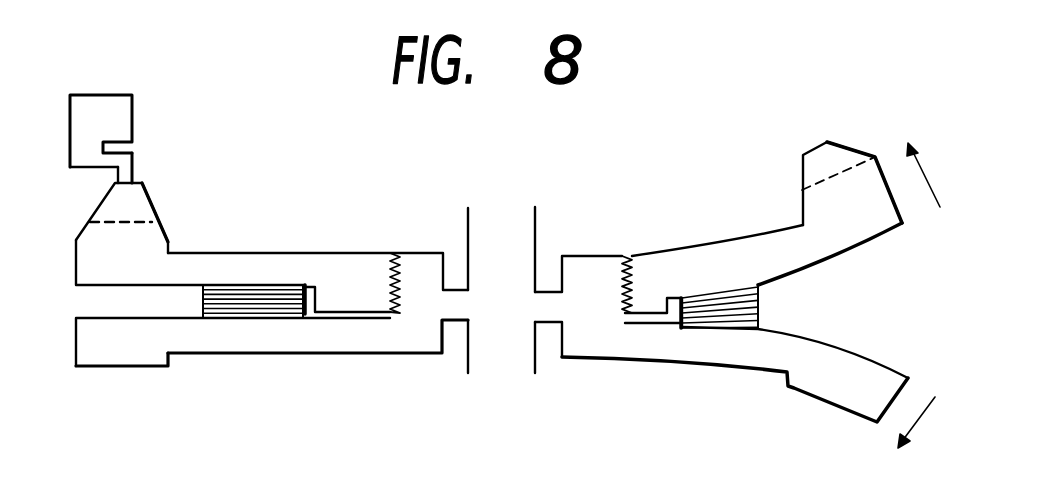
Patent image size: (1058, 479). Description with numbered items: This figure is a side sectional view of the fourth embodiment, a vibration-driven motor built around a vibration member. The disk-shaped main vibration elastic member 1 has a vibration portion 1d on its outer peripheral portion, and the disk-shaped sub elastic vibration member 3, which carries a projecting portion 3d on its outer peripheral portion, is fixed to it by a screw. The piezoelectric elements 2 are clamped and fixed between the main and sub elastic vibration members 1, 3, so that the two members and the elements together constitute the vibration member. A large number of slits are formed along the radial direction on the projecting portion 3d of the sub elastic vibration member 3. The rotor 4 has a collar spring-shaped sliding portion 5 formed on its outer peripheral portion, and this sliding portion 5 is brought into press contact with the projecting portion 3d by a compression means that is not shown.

The main vibration elastic member 1 is at (203, 337).
The vibration portion 1d is at (110, 353).
The piezoelectric elements 2 is at (287, 310).
The sub elastic vibration member 3 is at (240, 265).
The projecting portion 3d is at (140, 200).
The rotor 4 is at (93, 103).
The sliding portion 5 is at (133, 170).